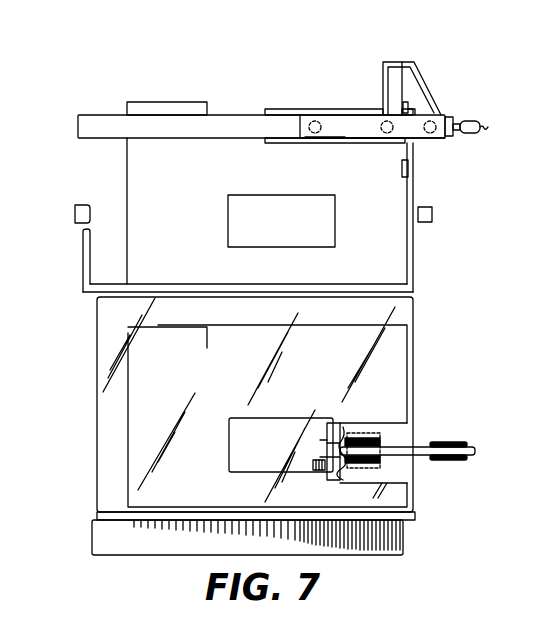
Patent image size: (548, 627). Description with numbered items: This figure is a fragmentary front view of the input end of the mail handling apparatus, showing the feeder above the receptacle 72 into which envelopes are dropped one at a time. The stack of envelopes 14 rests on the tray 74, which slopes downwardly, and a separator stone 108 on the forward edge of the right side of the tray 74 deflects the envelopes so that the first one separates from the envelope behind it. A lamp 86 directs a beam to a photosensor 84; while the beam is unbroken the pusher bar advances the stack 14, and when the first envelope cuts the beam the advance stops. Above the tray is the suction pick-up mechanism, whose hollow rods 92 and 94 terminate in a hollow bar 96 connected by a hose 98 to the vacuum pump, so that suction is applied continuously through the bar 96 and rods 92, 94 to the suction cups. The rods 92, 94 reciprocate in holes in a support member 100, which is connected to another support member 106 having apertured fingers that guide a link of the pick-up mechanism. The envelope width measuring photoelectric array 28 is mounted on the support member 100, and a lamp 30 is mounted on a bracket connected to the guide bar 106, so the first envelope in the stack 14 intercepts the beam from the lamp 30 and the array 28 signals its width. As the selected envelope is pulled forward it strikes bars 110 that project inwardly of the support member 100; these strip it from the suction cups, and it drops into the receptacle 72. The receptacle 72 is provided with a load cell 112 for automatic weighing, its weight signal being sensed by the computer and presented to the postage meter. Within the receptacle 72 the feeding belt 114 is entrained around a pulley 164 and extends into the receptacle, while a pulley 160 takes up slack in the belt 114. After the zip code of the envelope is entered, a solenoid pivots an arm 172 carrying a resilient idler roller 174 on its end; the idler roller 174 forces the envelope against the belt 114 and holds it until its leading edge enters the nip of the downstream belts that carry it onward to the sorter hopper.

The stack of envelopes 14 is at (127, 163).
The photoelectric array 28 is at (388, 85).
The lamp 30 is at (393, 62).
The receptacle 72 is at (95, 380).
The tray 74 is at (83, 269).
The photosensor 84 is at (433, 214).
The lamp 86 is at (75, 212).
The hollow rod 92 is at (320, 115).
The hollow rod 94 is at (385, 144).
The bar 96 is at (332, 145).
The hose 98 is at (488, 129).
The support member 100 is at (92, 115).
The support member 106 is at (450, 117).
The separator stone 108 is at (404, 168).
The bars 110 is at (275, 109).
The load cell 112 is at (92, 528).
The belt 114 is at (417, 457).
The pulley 160 is at (463, 458).
The pulley 164 is at (360, 467).
The arm 172 is at (342, 430).
The idler roller 174 is at (378, 432).